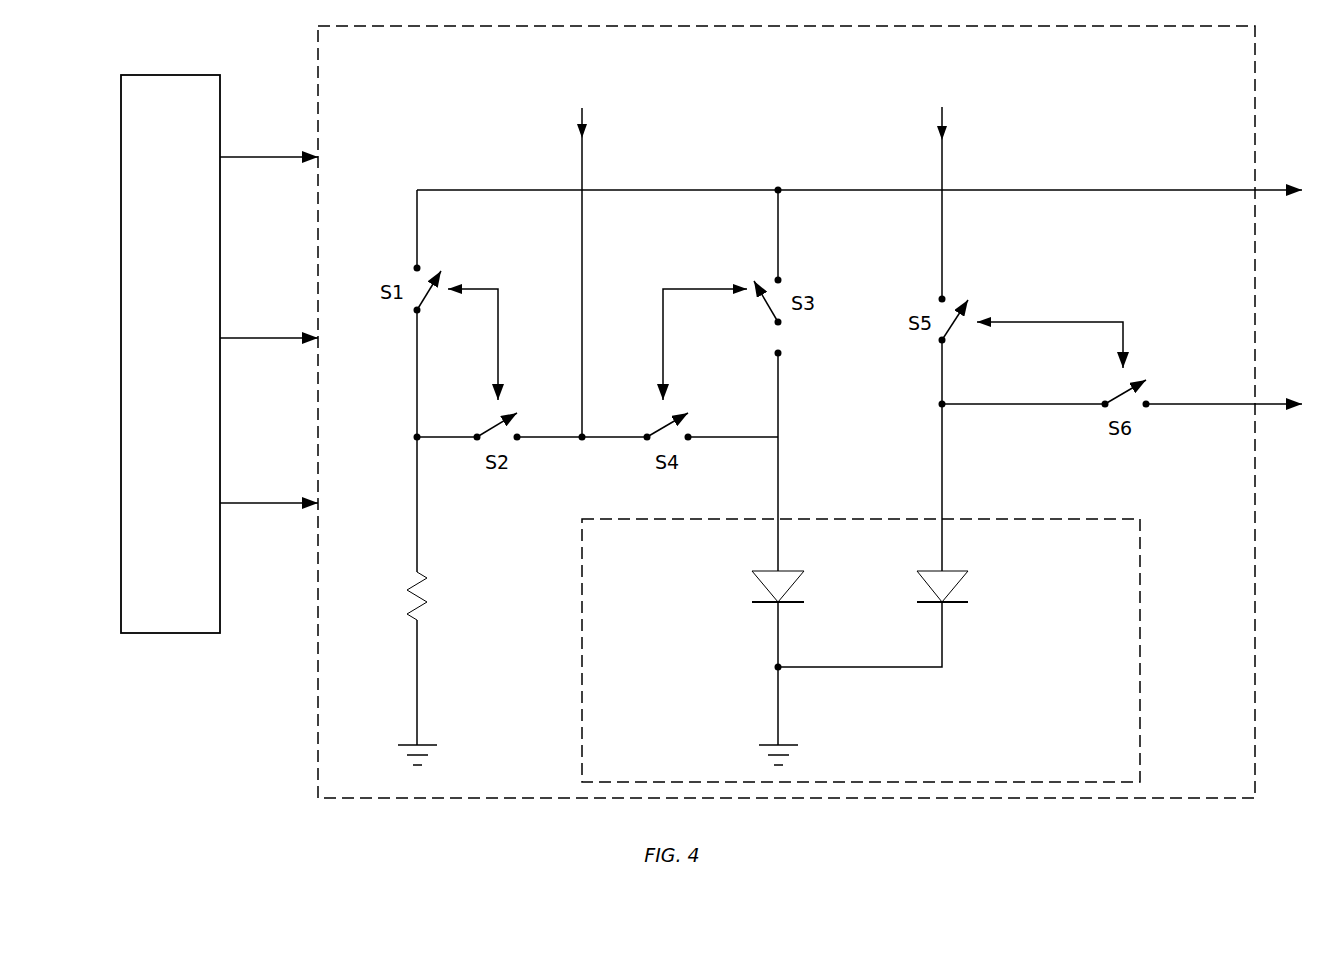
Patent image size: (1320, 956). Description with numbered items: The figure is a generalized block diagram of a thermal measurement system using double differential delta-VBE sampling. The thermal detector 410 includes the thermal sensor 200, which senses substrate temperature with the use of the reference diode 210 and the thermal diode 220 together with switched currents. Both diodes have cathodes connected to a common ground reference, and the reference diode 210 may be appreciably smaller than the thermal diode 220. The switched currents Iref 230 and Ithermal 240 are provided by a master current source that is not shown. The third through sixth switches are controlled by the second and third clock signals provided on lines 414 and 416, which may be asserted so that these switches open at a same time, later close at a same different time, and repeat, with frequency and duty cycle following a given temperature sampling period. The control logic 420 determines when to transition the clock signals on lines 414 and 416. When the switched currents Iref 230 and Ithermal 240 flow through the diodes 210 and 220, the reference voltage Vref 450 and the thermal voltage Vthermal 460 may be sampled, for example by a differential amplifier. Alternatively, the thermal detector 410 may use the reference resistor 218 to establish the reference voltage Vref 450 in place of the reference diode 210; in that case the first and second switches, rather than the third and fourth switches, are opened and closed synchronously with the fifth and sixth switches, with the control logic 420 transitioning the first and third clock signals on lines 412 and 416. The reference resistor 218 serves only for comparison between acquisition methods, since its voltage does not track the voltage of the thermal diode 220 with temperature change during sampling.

The thermal detector 410 is at (550, 71).
The control logic 420 is at (152, 393).
The line 412 is at (245, 155).
The line 414 is at (245, 336).
The line 416 is at (245, 501).
The reference current Iref 230 is at (586, 116).
The thermal current Ithermal 240 is at (945, 112).
The reference voltage Vref 450 is at (1220, 190).
The thermal voltage Vthermal 460 is at (1222, 405).
The reference resistor 218 is at (423, 590).
The reference diode 210 is at (752, 572).
The thermal diode 220 is at (968, 571).
The thermal sensor 200 is at (1092, 768).